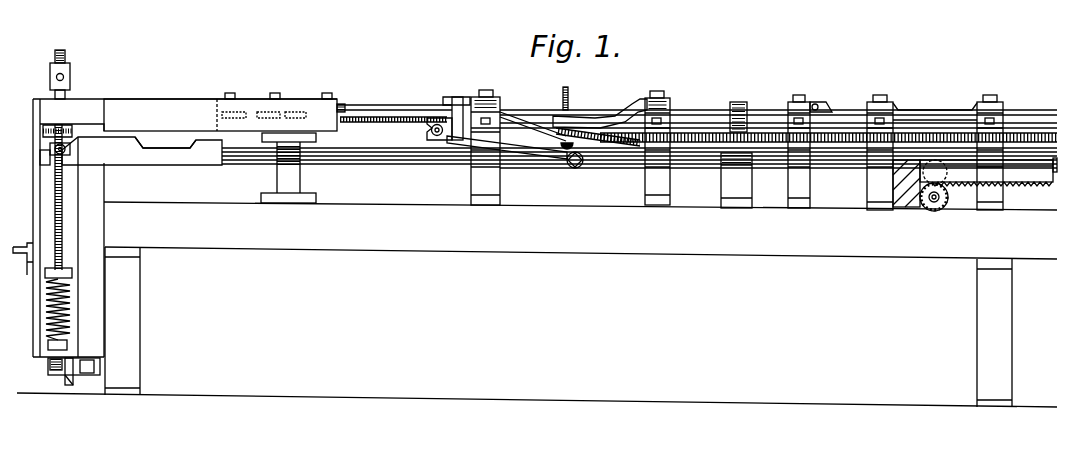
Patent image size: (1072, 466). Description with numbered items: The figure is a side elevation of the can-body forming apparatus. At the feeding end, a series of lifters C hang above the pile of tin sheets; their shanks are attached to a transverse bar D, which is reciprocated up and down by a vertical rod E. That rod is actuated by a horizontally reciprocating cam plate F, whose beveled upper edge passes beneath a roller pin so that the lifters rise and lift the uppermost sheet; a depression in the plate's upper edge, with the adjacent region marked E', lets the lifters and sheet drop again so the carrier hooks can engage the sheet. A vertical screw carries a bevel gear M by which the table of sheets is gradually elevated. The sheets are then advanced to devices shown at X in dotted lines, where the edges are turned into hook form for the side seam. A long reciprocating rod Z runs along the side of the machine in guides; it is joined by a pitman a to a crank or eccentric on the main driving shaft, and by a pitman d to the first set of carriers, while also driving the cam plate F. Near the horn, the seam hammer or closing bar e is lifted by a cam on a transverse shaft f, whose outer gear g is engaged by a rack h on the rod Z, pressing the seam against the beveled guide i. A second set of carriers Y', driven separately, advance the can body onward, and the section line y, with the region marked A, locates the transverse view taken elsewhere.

The transverse bar D is at (70, 78).
The edge-turning devices X is at (298, 113).
The lifters C is at (66, 146).
The connecting rod or pitman a is at (50, 151).
The lever notch E' is at (165, 141).
The cam plate F is at (118, 166).
The vertical rod E is at (39, 237).
The bevel gear M is at (68, 372).
The reciprocating rod Z is at (385, 160).
The connecting rod or pitman d is at (432, 137).
The section line y— y is at (575, 122).
The upper rods A is at (694, 122).
The carriers Y' is at (828, 117).
The beveled guide i is at (946, 110).
The hammer or closing bar e is at (912, 205).
The horizontal shaft f is at (928, 208).
The gear g is at (945, 208).
The rack h is at (1030, 183).